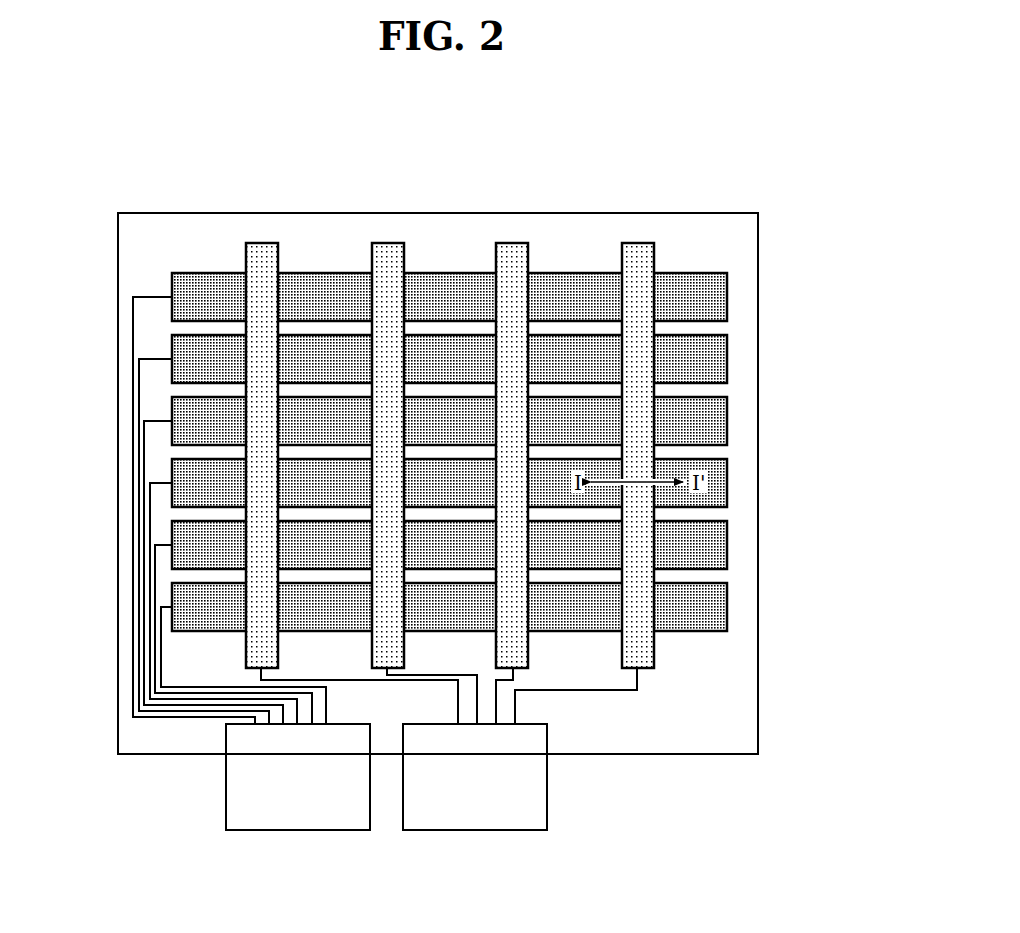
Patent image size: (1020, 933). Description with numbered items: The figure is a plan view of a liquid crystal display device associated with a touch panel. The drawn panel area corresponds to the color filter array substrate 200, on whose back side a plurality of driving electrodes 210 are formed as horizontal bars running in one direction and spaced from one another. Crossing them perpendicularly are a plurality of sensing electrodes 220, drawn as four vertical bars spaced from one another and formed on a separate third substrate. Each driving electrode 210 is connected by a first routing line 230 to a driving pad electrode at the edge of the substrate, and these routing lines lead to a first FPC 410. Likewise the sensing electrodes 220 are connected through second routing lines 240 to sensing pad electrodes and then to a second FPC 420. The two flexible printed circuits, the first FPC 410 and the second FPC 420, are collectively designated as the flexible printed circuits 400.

The color filter array substrate 200 is at (726, 213).
The driving electrodes 210 is at (728, 297).
The sensing electrodes 220 is at (648, 669).
The first routing lines 230 is at (134, 541).
The second routing lines 240 is at (592, 691).
The flexible printed circuits 400 is at (386, 813).
The first FPC 410 is at (298, 777).
The second FPC 420 is at (475, 777).